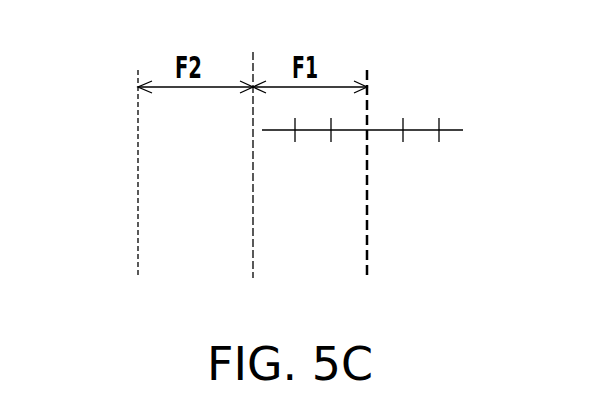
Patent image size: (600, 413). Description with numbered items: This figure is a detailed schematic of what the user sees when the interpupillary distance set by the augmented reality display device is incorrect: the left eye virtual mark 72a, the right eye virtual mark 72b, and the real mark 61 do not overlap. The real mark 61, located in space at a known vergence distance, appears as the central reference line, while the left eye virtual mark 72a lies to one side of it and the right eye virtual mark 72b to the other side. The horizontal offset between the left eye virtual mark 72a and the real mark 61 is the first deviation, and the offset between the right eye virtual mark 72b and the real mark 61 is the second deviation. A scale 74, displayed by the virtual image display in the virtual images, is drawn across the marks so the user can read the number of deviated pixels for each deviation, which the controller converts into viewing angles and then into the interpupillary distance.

The right eye virtual mark 72b is at (138, 247).
The real mark 61 is at (253, 247).
The left eye virtual mark 72a is at (367, 247).
The scale 74 is at (413, 130).